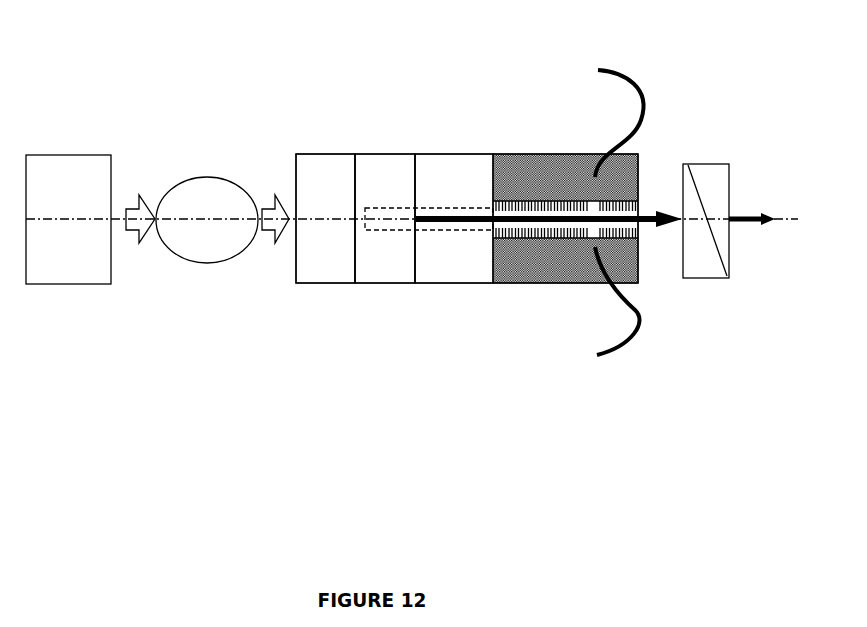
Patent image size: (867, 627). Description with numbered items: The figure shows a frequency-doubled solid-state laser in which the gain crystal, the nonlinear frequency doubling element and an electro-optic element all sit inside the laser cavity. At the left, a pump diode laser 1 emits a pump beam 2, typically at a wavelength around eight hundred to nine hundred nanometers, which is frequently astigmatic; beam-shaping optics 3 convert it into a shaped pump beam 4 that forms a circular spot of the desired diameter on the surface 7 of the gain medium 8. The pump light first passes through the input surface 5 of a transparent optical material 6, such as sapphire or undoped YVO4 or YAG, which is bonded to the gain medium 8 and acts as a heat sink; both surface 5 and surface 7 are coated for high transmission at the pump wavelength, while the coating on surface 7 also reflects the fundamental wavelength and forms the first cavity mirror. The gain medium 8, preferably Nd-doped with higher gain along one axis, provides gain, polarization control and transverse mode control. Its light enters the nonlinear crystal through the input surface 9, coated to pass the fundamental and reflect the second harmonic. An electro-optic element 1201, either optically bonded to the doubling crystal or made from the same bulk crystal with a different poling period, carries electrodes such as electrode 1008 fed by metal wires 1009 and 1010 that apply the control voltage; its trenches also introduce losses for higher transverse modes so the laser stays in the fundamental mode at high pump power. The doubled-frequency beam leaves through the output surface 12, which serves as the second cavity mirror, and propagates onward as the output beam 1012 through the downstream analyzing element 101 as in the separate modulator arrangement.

The pump diode laser 1 is at (70, 170).
The pump beam 2 is at (146, 229).
The beam-shaping optics 3 is at (220, 202).
The shaped pump beam 4 is at (276, 226).
The input surface of transparent heat sink 5 is at (295, 168).
The transparent optical material 6 is at (323, 271).
The surface of gain medium 7 is at (353, 168).
The gain medium 8 is at (385, 271).
The input surface of nonlinear crystal 9 is at (413, 168).
The output surface 12 is at (642, 166).
The heat sink / output coupler 101 is at (623, 73).
The electrode 1008 is at (522, 167).
The metal wire 1009 is at (555, 269).
The metal wire 1010 is at (646, 323).
The output beam 1012 is at (650, 212).
The electro-optic element 1201 is at (577, 167).